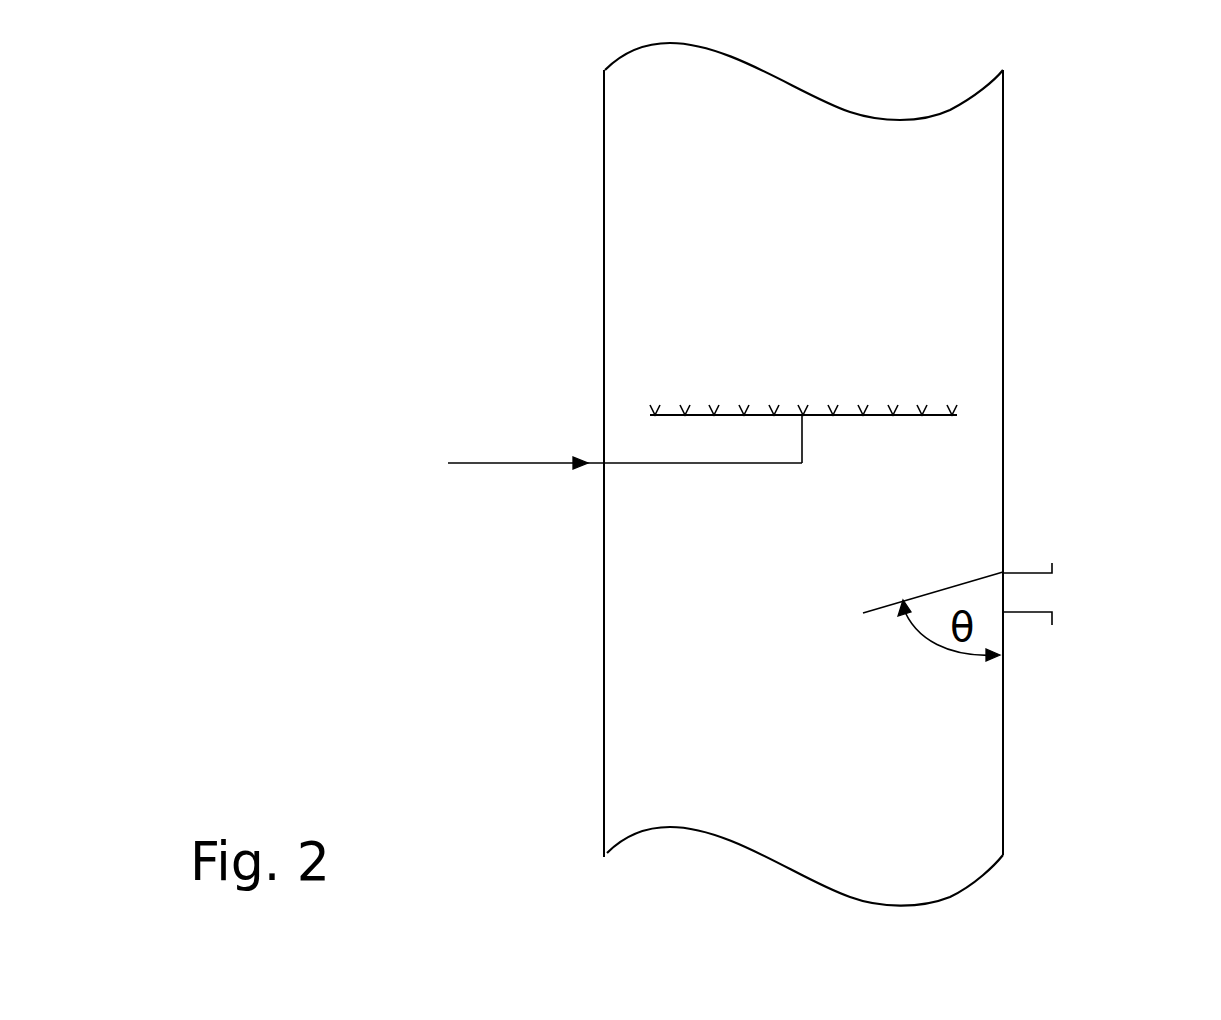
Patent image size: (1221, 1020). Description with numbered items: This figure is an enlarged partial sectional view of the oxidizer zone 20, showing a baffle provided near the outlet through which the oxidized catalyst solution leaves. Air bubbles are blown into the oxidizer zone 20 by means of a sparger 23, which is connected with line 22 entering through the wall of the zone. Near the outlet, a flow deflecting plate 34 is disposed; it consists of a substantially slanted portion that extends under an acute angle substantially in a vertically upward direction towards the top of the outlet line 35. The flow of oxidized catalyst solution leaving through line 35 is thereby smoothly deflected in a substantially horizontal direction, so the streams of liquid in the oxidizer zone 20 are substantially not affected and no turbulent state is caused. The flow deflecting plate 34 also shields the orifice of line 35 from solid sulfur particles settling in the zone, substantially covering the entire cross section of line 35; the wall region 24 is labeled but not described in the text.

The oxidizer zone 20 is at (958, 199).
The line 22 is at (505, 458).
The sparger 23 is at (957, 410).
The reactor wall 24 is at (967, 551).
The flow deflecting plate 34 is at (880, 610).
The outlet line 35 is at (1038, 587).